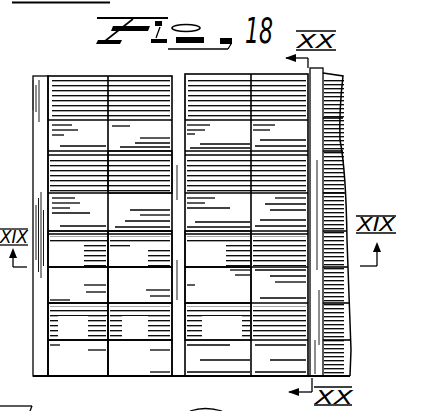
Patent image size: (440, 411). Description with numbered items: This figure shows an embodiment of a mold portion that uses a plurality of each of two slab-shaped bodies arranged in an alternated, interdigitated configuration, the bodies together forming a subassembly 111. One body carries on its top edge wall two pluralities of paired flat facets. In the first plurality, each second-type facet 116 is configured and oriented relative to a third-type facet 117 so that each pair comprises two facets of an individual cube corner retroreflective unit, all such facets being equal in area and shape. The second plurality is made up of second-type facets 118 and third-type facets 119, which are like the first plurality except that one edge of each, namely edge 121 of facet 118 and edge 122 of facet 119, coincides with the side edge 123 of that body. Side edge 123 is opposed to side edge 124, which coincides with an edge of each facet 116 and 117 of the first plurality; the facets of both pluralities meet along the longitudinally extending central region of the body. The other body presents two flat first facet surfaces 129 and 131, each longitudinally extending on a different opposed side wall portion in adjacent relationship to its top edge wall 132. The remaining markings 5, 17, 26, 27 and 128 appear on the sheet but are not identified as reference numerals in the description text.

The partial numeral (cut off) 5 is at (5, 38).
The adjacent figure element (cut off) 17 is at (114, 406).
The connector (cut off numeral) 26 is at (49, 322).
The connector (cut off numeral) 27 is at (49, 354).
The subassembly 111 is at (50, 380).
The second type flat facet surface 116 is at (76, 263).
The third type flat facet surface 117 is at (76, 299).
The second type facet of second plurality 118 is at (142, 335).
The third type facet of second plurality 119 is at (138, 299).
The edge of facet 118 121 is at (168, 247).
The edge of facet 119 122 is at (170, 284).
The side edge 123 is at (186, 76).
The side edge 124 is at (45, 84).
The center divider 128 is at (122, 62).
The first facet surface 129 is at (190, 324).
The first facet surface 131 is at (164, 177).
The top edge wall 132 is at (32, 80).